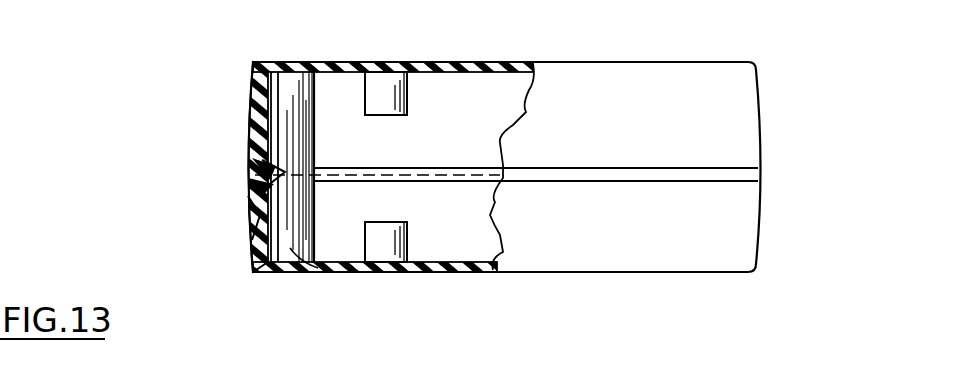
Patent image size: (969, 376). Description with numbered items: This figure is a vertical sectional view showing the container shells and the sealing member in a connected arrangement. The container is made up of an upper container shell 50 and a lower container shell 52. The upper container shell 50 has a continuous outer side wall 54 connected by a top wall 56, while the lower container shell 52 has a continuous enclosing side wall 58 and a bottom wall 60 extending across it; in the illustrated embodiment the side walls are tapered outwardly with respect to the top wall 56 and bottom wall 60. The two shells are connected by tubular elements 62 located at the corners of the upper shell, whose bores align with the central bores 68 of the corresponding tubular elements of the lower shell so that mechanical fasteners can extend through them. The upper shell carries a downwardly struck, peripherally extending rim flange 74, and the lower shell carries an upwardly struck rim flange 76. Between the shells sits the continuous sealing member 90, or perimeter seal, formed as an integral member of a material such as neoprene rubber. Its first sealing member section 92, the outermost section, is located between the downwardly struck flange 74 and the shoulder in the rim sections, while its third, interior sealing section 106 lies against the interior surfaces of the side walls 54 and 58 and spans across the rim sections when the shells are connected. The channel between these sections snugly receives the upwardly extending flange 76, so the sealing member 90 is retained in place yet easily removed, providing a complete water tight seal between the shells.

The upper container shell 50 is at (190, 55).
The lower container shell 52 is at (766, 245).
The outer side wall 54 is at (248, 115).
The top wall 56 is at (641, 62).
The side wall 58 is at (248, 222).
The bottom wall 60 is at (442, 273).
The tubular elements 62 is at (336, 62).
The central bores 68 is at (336, 273).
The rim flange 74 is at (245, 162).
The rim flange 76 is at (272, 186).
The sealing member 90 is at (292, 152).
The first sealing member section 92 is at (246, 170).
The third sealing section 106 is at (312, 171).